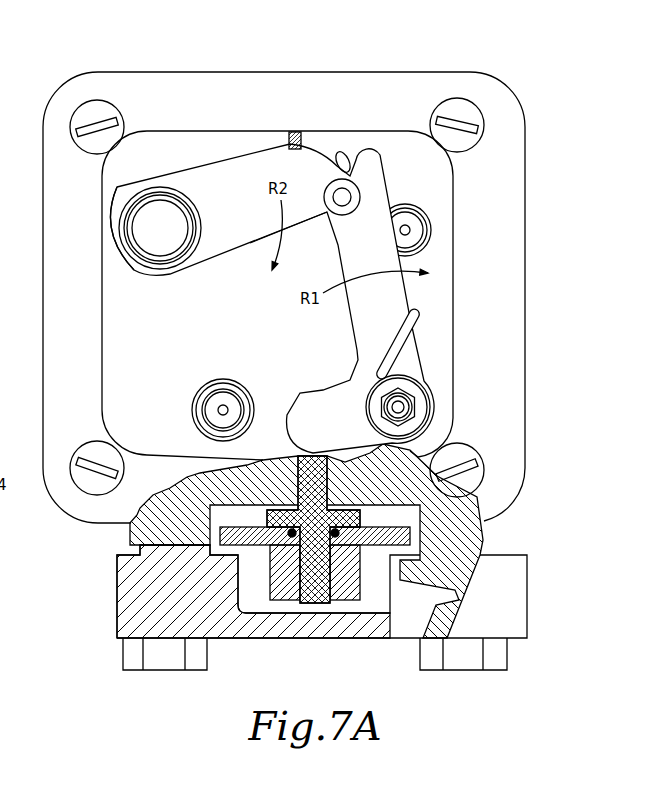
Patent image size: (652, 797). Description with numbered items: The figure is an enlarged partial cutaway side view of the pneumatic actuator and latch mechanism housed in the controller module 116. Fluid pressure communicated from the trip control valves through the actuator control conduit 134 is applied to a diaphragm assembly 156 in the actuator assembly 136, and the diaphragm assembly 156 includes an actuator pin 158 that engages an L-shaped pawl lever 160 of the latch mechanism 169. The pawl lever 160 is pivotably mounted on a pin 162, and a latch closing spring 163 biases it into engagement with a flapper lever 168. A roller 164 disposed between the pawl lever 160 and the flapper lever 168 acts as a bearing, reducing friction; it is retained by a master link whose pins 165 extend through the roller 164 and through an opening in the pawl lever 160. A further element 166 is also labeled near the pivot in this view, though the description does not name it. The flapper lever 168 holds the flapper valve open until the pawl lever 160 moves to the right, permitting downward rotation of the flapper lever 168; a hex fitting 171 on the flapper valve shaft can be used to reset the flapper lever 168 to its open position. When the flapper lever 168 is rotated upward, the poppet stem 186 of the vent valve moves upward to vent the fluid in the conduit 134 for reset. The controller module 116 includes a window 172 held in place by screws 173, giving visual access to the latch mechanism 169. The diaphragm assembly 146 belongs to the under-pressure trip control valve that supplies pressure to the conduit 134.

The controller module 116 is at (585, 33).
The actuator control conduit 134 is at (413, 590).
The actuator assembly 136 is at (540, 478).
The diaphragm assembly 146 is at (257, 548).
The diaphragm assembly 156 is at (188, 553).
The actuator pin 158 is at (330, 472).
The pawl lever 160 is at (405, 290).
The pin 162 is at (421, 398).
The latch closing spring 163 is at (392, 350).
The roller 164 is at (358, 192).
The pin 165 is at (340, 218).
The spring pin 166 is at (337, 150).
The flapper lever 168 is at (176, 274).
The latch mechanism 169 is at (540, 138).
The hex fitting 171 is at (146, 238).
The window 172 is at (58, 388).
The screws 173 is at (86, 113).
The stem 186 is at (289, 132).